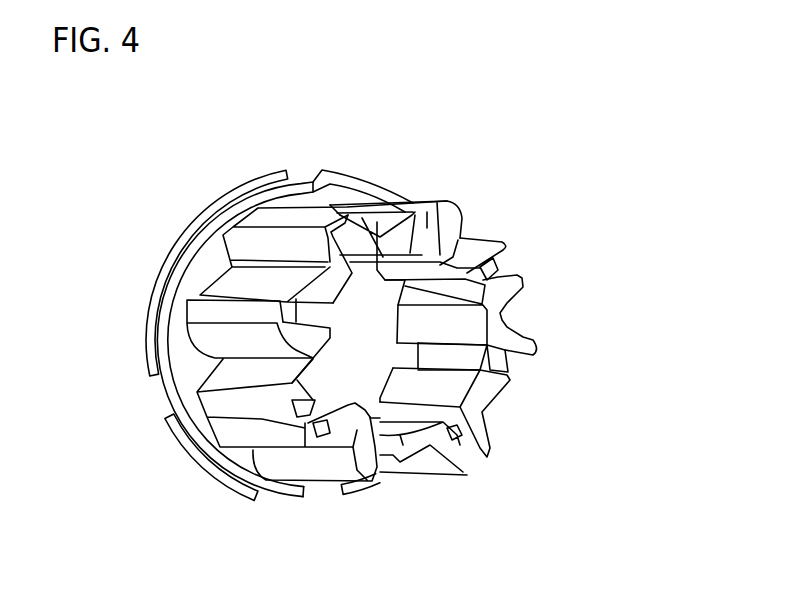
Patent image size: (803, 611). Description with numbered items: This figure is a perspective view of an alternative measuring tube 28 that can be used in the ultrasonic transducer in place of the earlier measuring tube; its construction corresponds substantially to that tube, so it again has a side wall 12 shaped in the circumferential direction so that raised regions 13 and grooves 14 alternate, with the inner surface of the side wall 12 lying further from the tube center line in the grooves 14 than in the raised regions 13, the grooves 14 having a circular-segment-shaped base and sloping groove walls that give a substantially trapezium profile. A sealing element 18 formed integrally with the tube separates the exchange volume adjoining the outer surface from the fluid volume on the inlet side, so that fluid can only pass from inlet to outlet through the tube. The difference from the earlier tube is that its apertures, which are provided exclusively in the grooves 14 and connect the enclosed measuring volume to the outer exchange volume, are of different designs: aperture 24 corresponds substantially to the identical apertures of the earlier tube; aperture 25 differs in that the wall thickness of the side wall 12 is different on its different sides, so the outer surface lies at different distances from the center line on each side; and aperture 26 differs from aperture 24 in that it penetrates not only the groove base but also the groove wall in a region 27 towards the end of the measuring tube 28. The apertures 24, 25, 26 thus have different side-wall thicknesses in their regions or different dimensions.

The side wall 12 is at (522, 345).
The raised regions 13 is at (400, 322).
The grooves 14 is at (443, 358).
The sealing element 18 is at (230, 185).
The aperture 24 is at (479, 466).
The aperture 25 is at (532, 374).
The aperture 26 is at (292, 411).
The region 27 is at (330, 432).
The measuring tube 28 is at (496, 178).